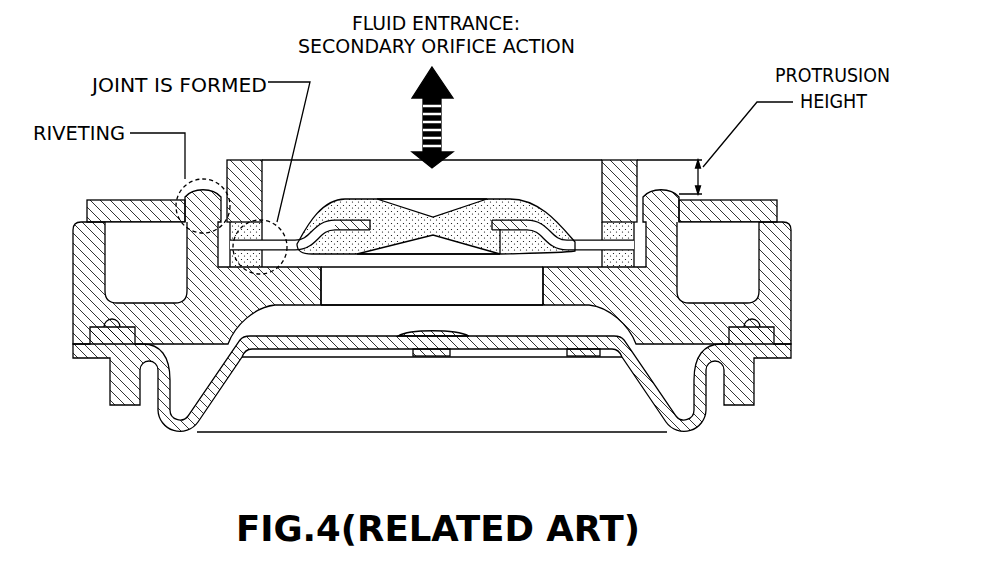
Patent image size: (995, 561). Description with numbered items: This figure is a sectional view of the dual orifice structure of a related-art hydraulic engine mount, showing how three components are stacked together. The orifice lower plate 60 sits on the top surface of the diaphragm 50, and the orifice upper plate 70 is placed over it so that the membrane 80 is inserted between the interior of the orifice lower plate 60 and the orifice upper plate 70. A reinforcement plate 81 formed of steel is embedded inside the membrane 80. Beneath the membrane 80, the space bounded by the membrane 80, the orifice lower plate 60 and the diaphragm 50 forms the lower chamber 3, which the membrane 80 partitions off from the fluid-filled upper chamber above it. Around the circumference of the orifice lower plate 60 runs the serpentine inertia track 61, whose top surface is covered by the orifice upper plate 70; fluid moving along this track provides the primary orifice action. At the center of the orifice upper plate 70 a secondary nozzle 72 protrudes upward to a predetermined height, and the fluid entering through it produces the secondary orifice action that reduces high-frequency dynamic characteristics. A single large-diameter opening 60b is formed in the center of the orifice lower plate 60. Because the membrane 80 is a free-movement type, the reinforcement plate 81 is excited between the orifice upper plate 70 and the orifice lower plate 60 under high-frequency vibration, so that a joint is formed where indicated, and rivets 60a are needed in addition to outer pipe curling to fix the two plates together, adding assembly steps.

The lower chamber 3 is at (550, 326).
The diaphragm 50 is at (695, 433).
The orifice lower plate 60 is at (793, 290).
The rivet 60a is at (200, 182).
The opening 60b is at (540, 288).
The inertia track 61 is at (723, 250).
The orifice upper plate 70 is at (757, 197).
The secondary nozzle 72 is at (617, 175).
The membrane 80 is at (432, 290).
The reinforcement plate 81 is at (327, 246).